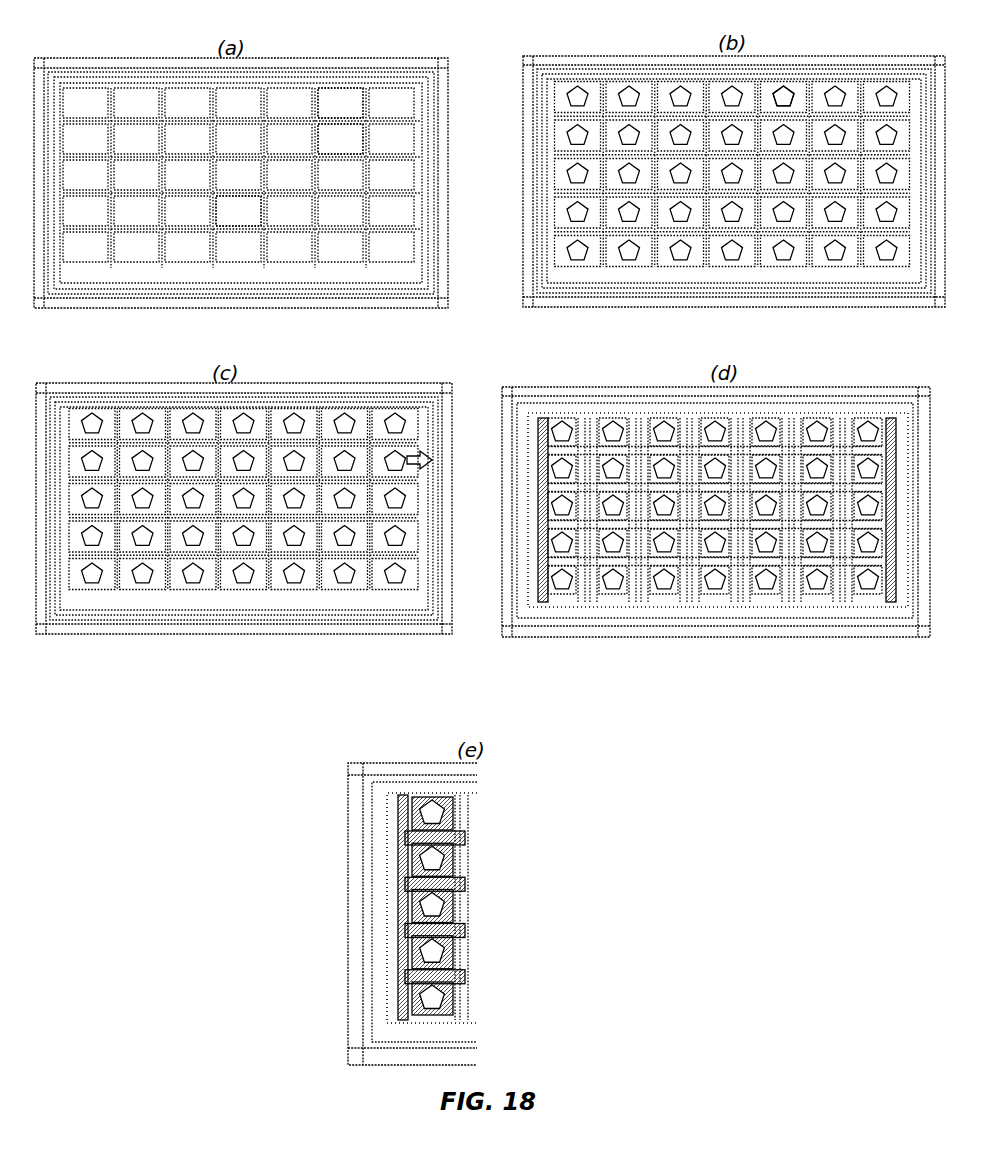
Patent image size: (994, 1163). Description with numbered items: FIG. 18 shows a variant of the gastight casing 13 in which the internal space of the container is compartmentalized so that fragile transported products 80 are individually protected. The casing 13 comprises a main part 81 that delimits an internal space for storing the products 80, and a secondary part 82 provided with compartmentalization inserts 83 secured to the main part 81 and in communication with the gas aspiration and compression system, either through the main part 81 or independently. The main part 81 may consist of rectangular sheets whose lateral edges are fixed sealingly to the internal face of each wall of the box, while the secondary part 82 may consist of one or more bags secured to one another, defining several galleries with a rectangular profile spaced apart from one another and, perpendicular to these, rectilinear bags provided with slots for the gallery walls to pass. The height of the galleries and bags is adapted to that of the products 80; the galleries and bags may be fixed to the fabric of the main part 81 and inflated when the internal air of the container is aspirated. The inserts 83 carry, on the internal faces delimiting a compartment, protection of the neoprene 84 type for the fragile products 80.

The gastight casing 13 is at (321, 131).
The products 80 is at (789, 91).
The main part 81 is at (122, 78).
The secondary part 82 is at (378, 216).
The compartmentalization inserts 83 is at (239, 206).
The neoprene 84 is at (452, 826).